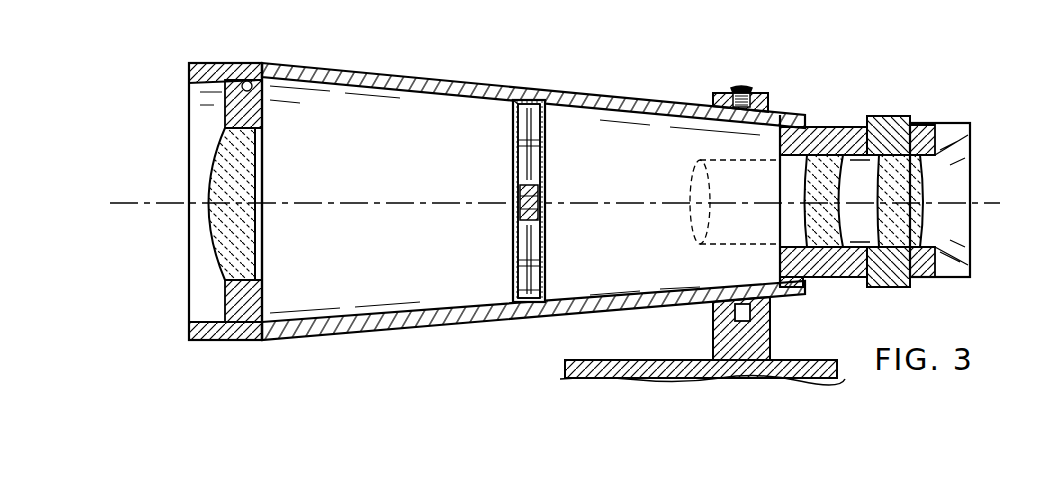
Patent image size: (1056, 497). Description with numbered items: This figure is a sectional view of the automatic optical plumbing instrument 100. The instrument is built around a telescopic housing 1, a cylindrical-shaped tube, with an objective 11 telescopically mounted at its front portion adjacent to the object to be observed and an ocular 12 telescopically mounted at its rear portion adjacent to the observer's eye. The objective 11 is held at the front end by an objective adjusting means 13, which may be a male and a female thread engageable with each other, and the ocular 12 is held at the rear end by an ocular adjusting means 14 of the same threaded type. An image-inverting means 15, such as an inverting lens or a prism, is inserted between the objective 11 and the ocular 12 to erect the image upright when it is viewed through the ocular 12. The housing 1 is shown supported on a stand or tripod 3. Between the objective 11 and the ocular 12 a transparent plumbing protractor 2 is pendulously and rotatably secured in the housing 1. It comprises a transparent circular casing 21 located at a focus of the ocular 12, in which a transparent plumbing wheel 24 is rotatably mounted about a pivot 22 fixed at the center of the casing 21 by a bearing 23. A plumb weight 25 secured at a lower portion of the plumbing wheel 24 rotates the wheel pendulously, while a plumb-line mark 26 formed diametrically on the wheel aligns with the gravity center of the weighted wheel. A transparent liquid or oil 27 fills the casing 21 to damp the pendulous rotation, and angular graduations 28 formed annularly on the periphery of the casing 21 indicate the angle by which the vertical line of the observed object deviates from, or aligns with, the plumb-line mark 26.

The automatic optical plumbing instrument 100 is at (606, 29).
The telescopic housing 1 is at (371, 64).
The transparent plumbing protractor 2 is at (556, 146).
The stand or tripod 3 is at (805, 357).
The objective 11 is at (213, 157).
The ocular 12 is at (835, 158).
The objective adjusting means 13 is at (240, 86).
The ocular adjusting means 14 is at (905, 120).
The image-inverting means 15 is at (697, 160).
The transparent circular casing 21 is at (516, 147).
The pivot 22 is at (547, 197).
The bearing 23 is at (513, 197).
The transparent plumbing wheel 24 is at (532, 232).
The plumb weight 25 is at (513, 275).
The plumb-line mark 26 is at (532, 130).
The transparent liquid or oil 27 is at (513, 240).
The angular graduations 28 is at (541, 299).